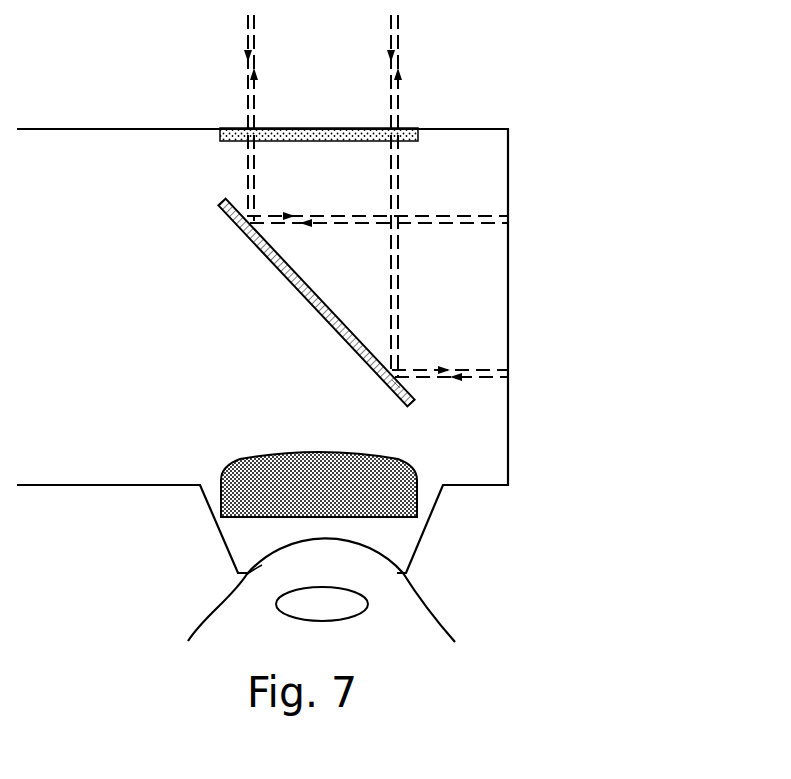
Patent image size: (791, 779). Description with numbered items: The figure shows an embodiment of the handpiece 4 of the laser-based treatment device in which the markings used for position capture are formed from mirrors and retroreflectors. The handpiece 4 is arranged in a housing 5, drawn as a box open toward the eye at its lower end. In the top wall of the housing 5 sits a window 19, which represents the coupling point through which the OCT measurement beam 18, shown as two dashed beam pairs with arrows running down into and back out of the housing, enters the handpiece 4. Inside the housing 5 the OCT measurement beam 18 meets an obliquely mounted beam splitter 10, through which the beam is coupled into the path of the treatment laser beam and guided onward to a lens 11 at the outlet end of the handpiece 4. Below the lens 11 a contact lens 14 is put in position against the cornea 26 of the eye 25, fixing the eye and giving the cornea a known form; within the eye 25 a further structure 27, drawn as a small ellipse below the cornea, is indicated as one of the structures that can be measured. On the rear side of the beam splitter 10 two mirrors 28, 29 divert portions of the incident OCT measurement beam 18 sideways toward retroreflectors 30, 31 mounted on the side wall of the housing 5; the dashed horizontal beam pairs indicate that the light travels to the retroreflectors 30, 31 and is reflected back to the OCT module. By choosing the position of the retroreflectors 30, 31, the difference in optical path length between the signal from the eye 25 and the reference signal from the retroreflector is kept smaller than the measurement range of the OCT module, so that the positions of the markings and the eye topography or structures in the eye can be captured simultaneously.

The handpiece 4 is at (96, 307).
The housing 5 is at (508, 308).
The beam splitter 10 is at (325, 318).
The lens 11 is at (221, 480).
The contact lens 14 is at (405, 537).
The OCT measurement beam 18 is at (255, 55).
The window 19 is at (220, 137).
The eye 25 is at (425, 597).
The cornea 26 is at (262, 565).
The skin feature 27 is at (322, 605).
The mirror 28 is at (250, 217).
The mirror 29 is at (388, 385).
The retroreflector 30 is at (508, 222).
The retroreflector 31 is at (508, 377).